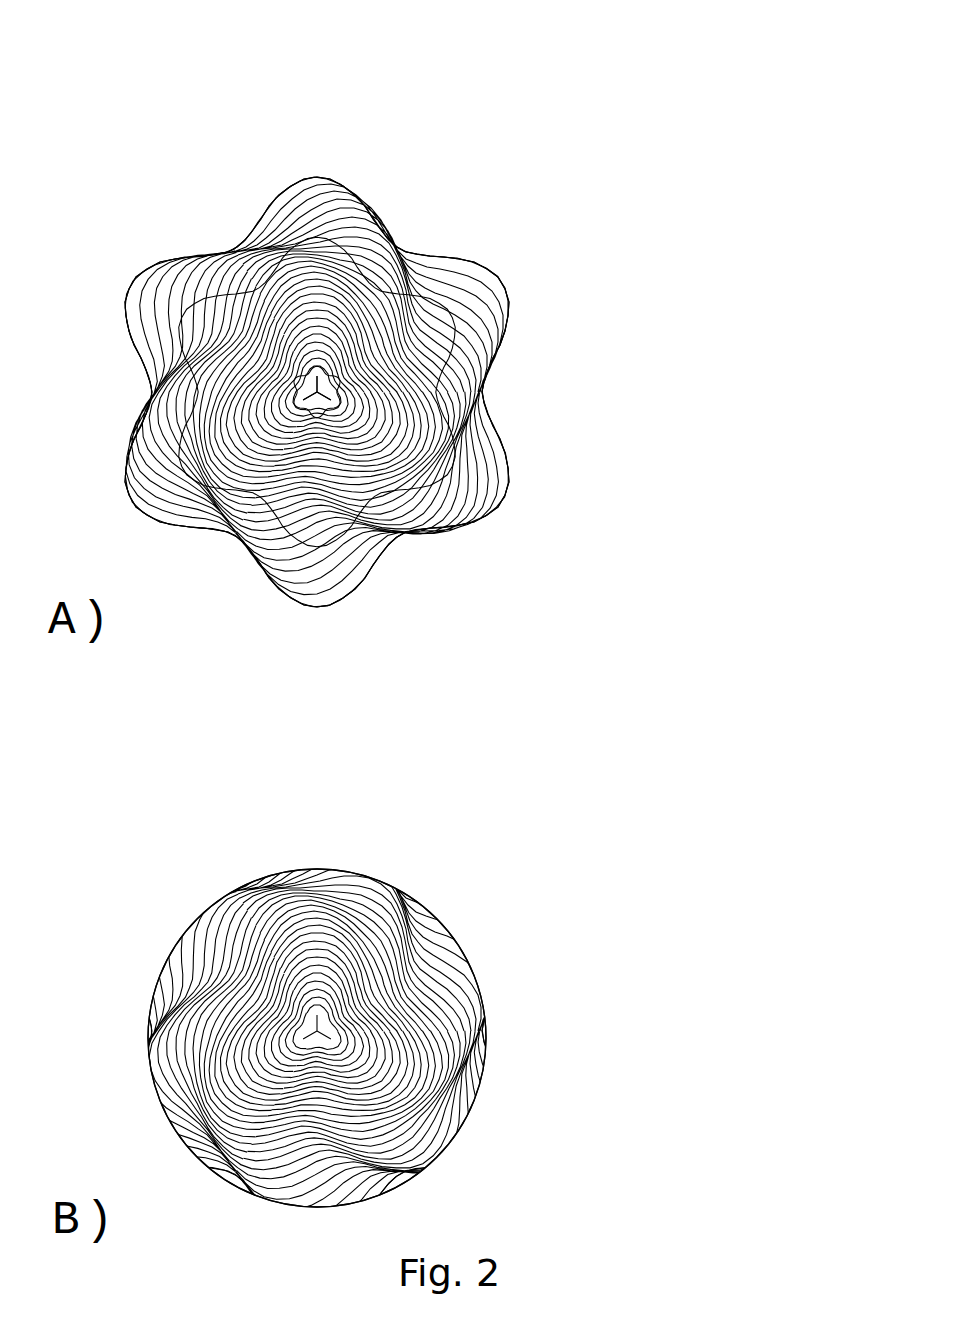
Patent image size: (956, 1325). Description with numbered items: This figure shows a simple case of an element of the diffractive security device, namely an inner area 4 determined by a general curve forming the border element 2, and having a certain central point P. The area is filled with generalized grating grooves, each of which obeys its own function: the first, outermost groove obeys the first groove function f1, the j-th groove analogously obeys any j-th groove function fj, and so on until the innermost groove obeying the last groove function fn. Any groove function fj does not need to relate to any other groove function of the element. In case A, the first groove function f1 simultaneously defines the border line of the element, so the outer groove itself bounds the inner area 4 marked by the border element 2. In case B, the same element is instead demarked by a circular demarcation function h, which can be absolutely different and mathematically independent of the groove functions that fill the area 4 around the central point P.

The border element 2 is at (297, 258).
The inner area 4 is at (416, 533).
The first groove function f1 is at (316, 160).
The j-th groove function fj is at (452, 324).
The n-th groove function fn is at (352, 399).
The central point P is at (321, 414).
The demarcation function h is at (505, 1036).